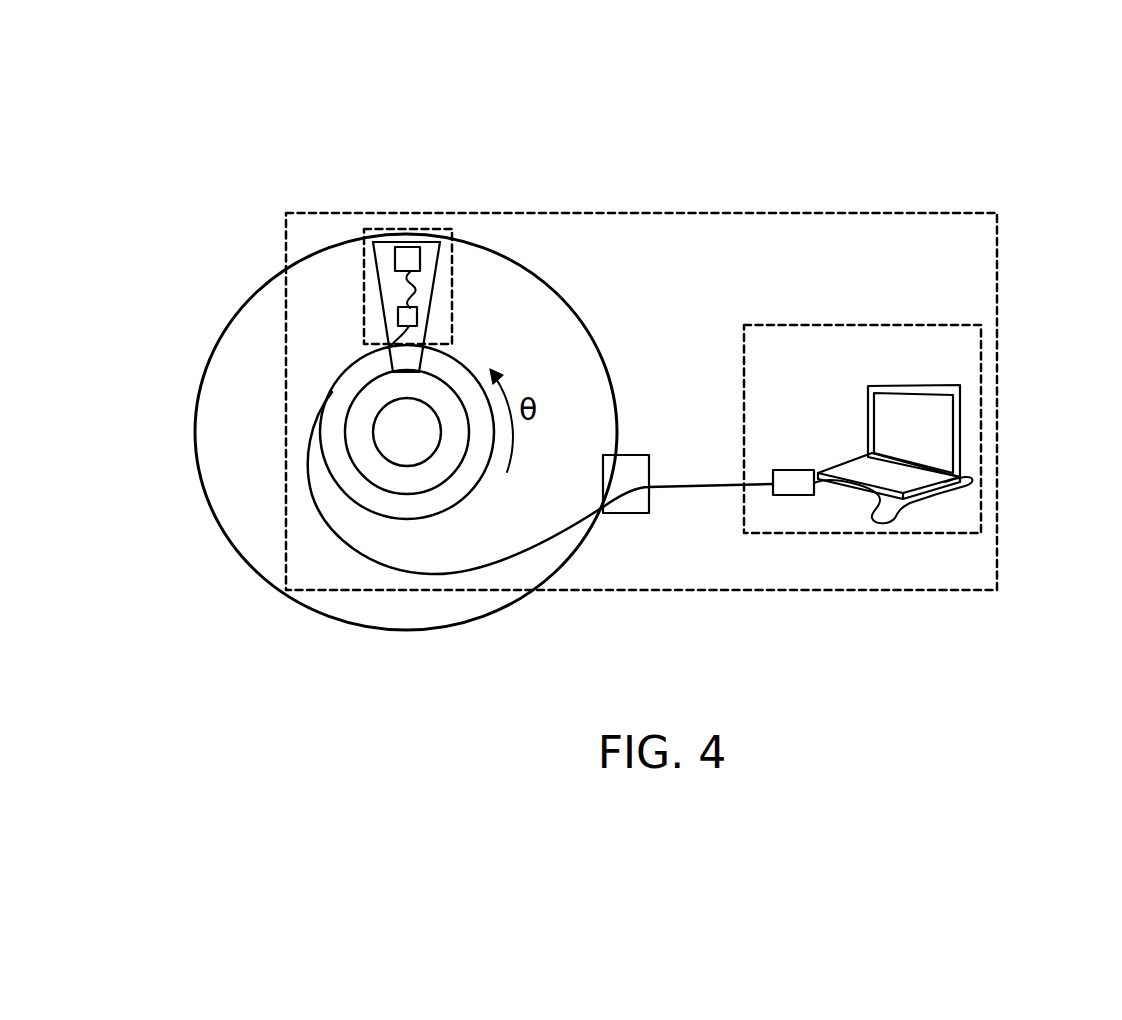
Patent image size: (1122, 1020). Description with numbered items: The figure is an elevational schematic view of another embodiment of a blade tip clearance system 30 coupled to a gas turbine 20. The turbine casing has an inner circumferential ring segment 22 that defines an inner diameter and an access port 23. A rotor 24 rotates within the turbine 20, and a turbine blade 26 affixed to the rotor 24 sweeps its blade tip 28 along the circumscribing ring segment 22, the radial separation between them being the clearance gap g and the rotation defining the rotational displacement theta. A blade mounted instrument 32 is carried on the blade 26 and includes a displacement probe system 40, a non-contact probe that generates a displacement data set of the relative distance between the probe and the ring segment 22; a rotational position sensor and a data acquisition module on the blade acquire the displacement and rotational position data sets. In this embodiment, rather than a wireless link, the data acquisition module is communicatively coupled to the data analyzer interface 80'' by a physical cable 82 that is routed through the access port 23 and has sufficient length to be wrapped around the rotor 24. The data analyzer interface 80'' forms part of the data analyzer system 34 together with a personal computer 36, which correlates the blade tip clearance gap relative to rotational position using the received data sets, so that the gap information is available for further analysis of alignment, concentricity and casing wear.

The gas turbine 20 is at (258, 614).
The inner circumferential ring segment 22 is at (212, 497).
The access port 23 is at (603, 513).
The rotor 24 is at (430, 472).
The turbine blade 26 is at (397, 293).
The blade tip 28 is at (388, 240).
The blade tip clearance system 30 is at (1024, 254).
The blade mounted instrument 32 is at (352, 308).
The data analyzer system 34 is at (571, 536).
The personal computer 36 is at (923, 421).
The displacement probe system 40 is at (413, 256).
The data analyzer interface 80'' is at (819, 567).
The physical cable 82 is at (633, 477).